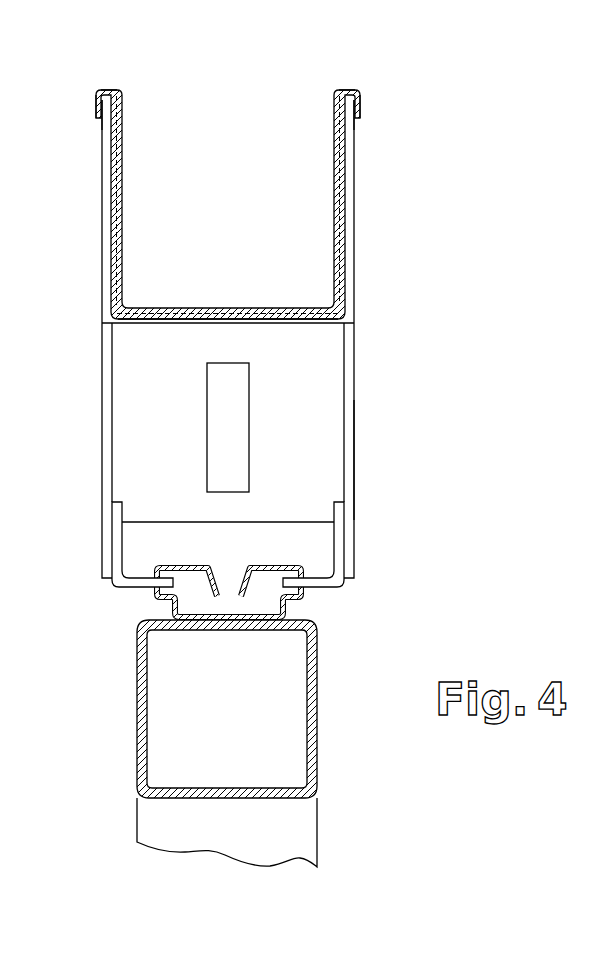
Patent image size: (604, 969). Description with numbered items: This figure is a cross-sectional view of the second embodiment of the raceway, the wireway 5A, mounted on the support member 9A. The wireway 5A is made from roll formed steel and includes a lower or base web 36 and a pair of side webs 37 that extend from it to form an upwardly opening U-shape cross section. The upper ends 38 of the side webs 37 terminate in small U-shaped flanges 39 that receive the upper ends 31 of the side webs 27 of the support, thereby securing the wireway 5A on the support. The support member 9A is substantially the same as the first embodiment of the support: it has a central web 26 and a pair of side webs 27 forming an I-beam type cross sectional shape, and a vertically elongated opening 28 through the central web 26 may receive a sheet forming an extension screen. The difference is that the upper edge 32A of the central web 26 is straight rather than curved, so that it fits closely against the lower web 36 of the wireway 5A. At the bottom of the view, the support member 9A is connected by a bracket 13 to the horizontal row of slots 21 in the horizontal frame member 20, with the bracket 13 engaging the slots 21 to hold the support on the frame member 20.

The wireway 5A is at (124, 128).
The support member 9A is at (362, 475).
The bracket 13 is at (113, 583).
The horizontal frame member 20 is at (137, 703).
The slots 21 is at (152, 602).
The central web 26 is at (305, 375).
The side webs 27 is at (353, 403).
The vertically elongated opening 28 is at (217, 408).
The upper ends 31 is at (100, 127).
The upper edge 32A is at (183, 323).
The base web 36 is at (208, 313).
The side webs 37 is at (123, 222).
The upper ends 38 is at (106, 92).
The U-shaped flanges 39 is at (97, 108).